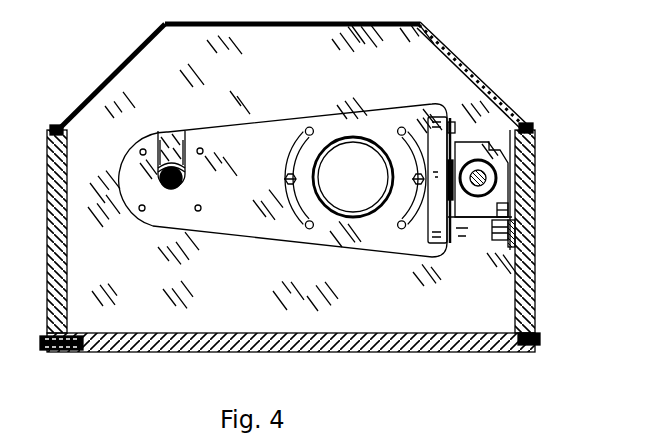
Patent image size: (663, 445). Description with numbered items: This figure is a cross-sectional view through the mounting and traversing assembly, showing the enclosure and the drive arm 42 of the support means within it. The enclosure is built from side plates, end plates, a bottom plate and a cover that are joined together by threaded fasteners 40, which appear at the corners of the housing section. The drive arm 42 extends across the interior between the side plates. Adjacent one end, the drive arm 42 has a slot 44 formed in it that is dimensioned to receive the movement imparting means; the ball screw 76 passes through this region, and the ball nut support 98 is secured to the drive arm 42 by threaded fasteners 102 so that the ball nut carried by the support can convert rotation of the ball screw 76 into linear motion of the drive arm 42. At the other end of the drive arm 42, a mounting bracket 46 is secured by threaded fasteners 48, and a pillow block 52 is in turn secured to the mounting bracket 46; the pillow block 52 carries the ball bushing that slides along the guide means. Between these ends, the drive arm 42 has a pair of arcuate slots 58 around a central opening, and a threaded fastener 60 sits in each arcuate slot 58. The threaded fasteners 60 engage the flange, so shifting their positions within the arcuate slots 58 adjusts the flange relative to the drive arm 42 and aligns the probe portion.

The threaded fastener 40 is at (522, 128).
The drive arm 42 is at (302, 106).
The slot 44 is at (173, 130).
The mounting bracket 46 is at (440, 112).
The threaded fastener 48 is at (449, 121).
The pillow block 52 is at (487, 218).
The arcuate slot 58 is at (305, 131).
The threaded fastener 60 is at (285, 179).
The ball screw 76 is at (164, 190).
The ball nut support 98 is at (177, 130).
The threaded fastener 102 is at (200, 150).